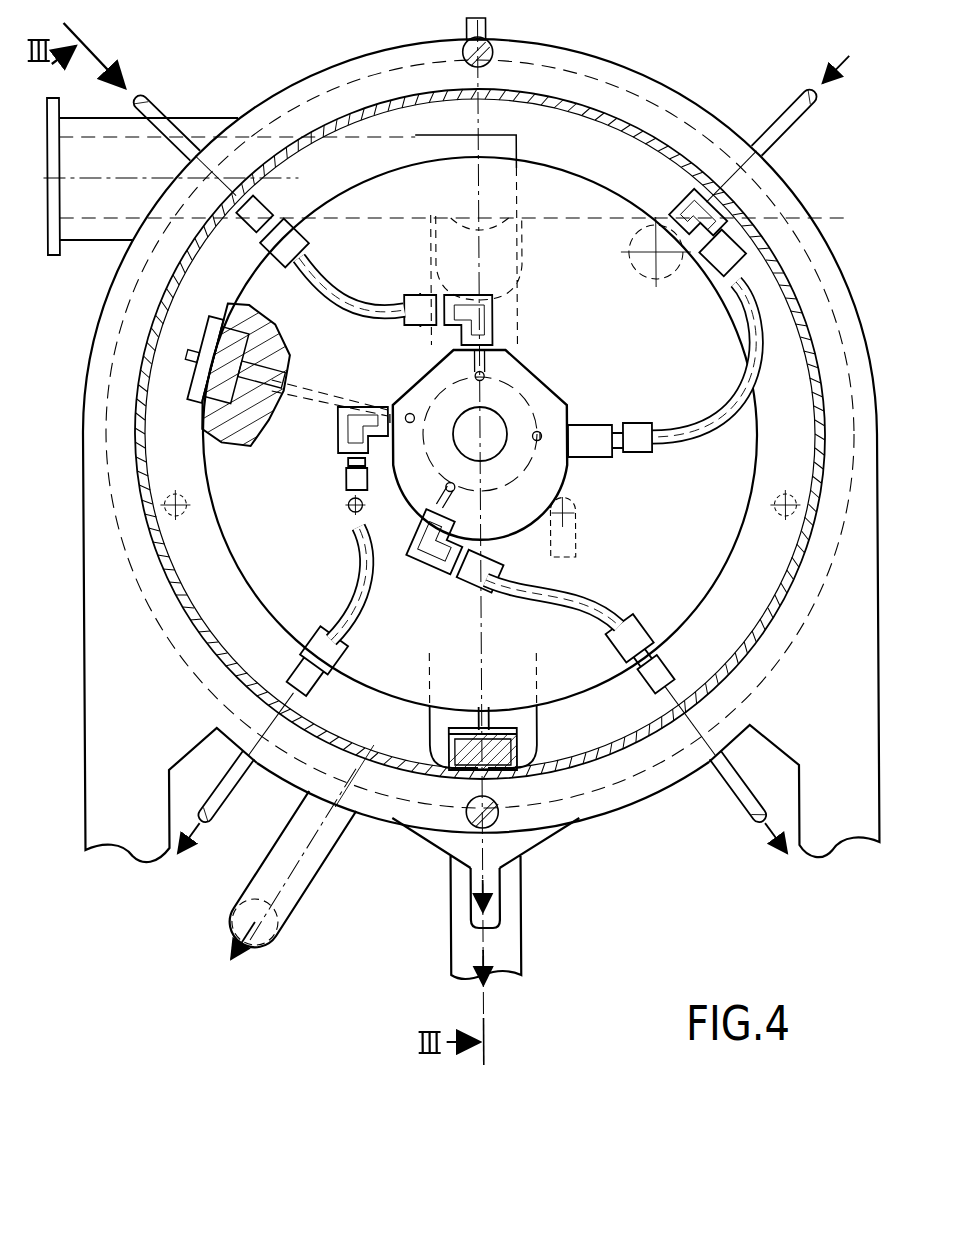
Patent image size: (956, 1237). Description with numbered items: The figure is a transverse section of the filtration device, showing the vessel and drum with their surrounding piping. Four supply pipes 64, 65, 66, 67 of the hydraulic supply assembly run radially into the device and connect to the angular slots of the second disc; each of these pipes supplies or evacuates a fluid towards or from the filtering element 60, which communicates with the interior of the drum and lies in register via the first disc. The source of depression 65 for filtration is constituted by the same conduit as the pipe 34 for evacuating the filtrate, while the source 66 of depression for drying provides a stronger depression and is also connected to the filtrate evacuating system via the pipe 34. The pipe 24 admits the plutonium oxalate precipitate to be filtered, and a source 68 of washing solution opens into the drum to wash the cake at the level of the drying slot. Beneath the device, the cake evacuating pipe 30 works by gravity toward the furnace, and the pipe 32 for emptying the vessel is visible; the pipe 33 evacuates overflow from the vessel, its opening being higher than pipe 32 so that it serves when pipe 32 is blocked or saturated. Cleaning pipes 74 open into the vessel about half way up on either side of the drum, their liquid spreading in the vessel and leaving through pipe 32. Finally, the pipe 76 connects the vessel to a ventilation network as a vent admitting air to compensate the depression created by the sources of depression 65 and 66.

The pipe for admission of the precipitate 24 is at (598, 531).
The cake evacuating pipe 30 is at (446, 912).
The vessel emptying pipe 32 is at (492, 908).
The overflow evacuating pipe 33 is at (272, 932).
The filtrate evacuating pipe 34 is at (643, 721).
The filtering element 60 is at (176, 373).
The supply pipe 64 is at (162, 112).
The source of depression for filtration 65 is at (724, 799).
The source of depression for drying 66 is at (250, 814).
The supply pipe 67 is at (721, 254).
The source of solution for washing the cake 68 is at (346, 508).
The cleaning pipes 74 is at (111, 509).
The vent pipe 76 is at (812, 214).